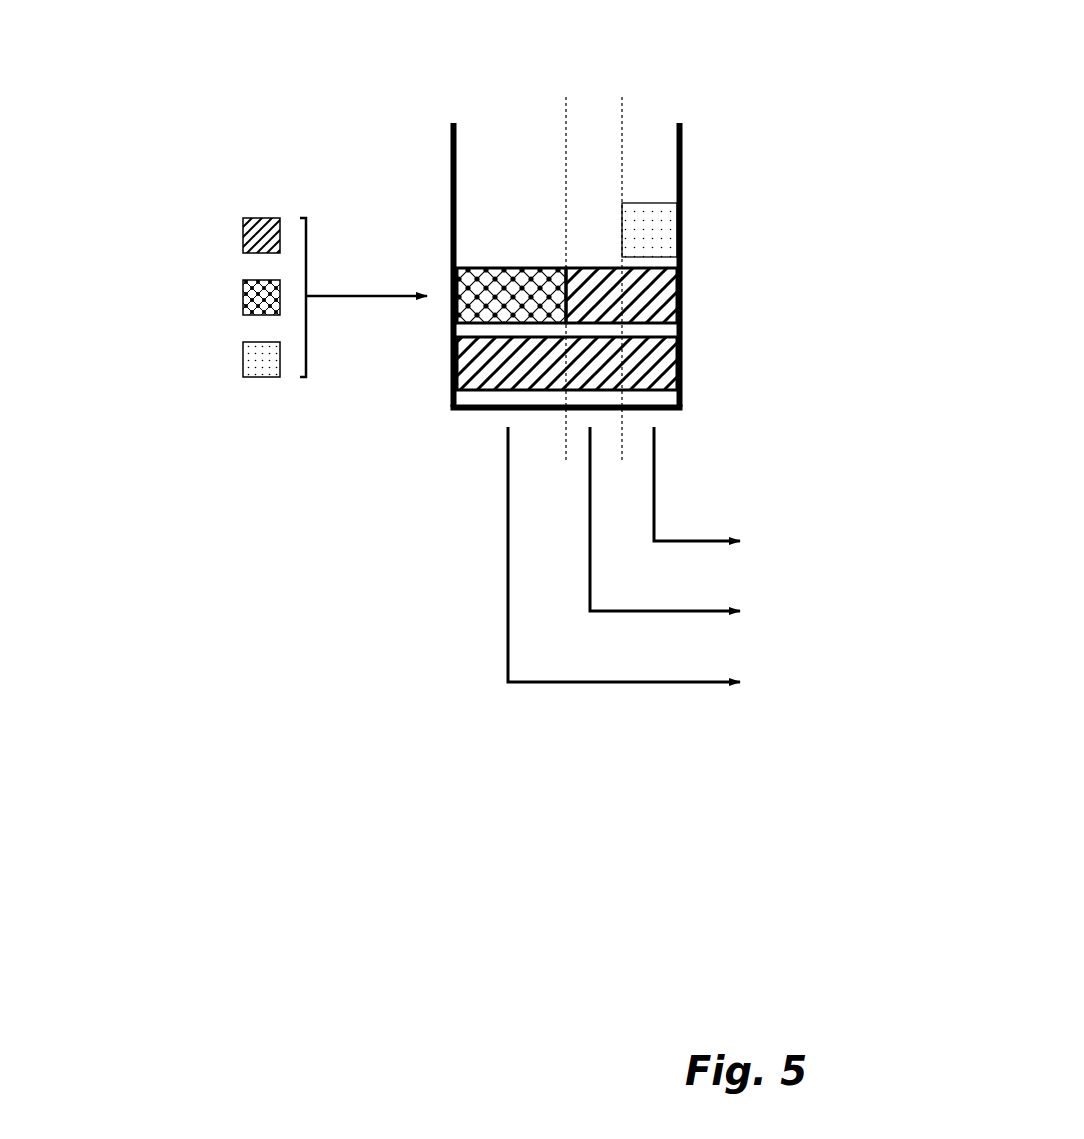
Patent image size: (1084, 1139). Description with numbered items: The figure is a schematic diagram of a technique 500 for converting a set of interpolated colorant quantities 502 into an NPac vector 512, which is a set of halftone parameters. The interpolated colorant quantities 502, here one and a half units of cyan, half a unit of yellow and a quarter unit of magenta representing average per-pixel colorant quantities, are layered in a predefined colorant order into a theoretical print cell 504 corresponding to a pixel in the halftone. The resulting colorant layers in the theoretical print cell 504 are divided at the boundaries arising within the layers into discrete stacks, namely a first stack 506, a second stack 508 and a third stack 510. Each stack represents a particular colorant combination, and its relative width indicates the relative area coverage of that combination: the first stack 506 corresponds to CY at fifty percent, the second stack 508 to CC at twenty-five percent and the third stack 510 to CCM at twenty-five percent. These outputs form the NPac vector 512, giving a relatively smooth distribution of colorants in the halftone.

The technique 500 is at (243, 602).
The set of interpolated colorant quantities 502 is at (121, 281).
The theoretical print cell 504 is at (451, 160).
The first stack 506 is at (500, 97).
The second stack 508 is at (586, 97).
The third stack 510 is at (647, 97).
The NPac vector 512 is at (878, 588).